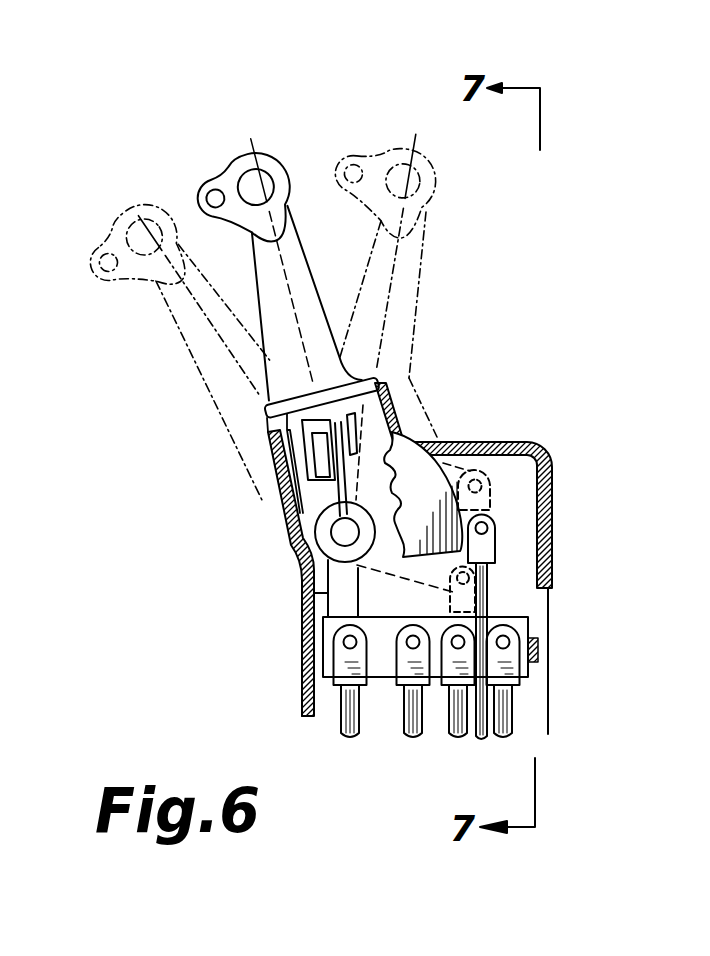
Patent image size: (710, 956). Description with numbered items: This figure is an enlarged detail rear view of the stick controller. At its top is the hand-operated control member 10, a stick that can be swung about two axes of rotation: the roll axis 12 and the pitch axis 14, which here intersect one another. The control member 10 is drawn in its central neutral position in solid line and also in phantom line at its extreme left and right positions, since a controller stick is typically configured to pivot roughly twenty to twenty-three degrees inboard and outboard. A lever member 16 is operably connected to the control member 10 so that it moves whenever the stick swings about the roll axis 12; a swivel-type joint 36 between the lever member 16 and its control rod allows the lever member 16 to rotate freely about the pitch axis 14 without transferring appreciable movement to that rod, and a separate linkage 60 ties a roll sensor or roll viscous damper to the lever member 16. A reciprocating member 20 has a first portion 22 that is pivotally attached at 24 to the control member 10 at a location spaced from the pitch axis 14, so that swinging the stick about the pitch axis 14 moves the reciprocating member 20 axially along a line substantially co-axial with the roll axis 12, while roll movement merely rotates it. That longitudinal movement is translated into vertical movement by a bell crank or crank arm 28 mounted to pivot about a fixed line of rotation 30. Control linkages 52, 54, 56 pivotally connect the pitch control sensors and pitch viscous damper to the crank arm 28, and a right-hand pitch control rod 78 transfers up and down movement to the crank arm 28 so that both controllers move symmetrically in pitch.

The hand-operated control member 10 is at (293, 240).
The roll axis of rotation 12 is at (298, 562).
The pitch axis of rotation 14 is at (300, 535).
The lever member 16 is at (488, 582).
The reciprocating member 20 is at (284, 534).
The first portion of the reciprocating member 22 is at (330, 486).
The pivotal attachment 24 is at (312, 459).
The crank arm 28 is at (303, 603).
The fixed line of rotation 30 is at (538, 653).
The swivel-type joint 36 is at (301, 695).
The control linkage 52 is at (507, 717).
The control linkage 54 is at (450, 727).
The control linkage 56 is at (404, 727).
The linkage 60 is at (474, 737).
The right-hand pitch control rod 78 is at (341, 721).